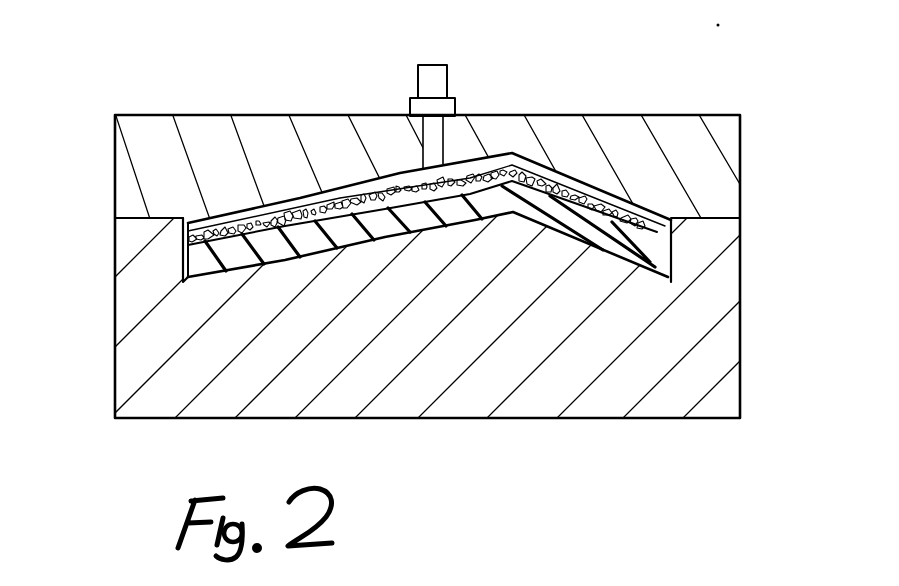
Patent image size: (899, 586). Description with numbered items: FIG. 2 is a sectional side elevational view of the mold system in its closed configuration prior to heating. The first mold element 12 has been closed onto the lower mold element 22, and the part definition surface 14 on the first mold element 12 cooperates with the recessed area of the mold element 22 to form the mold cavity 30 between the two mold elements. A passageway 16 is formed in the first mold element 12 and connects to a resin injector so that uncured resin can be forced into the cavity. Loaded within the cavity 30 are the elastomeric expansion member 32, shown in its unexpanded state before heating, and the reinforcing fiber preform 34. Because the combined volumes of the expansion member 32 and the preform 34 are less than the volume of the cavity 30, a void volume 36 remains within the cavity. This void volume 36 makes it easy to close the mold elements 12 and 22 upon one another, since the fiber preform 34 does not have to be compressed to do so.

The first mold element 12 is at (130, 183).
The mold element 22 is at (132, 366).
The passageway 16 is at (438, 137).
The part definition surface 14 is at (512, 159).
The mold cavity 30 is at (217, 212).
The void volume 36 is at (645, 212).
The reinforcing fiber preform 34 is at (660, 233).
The elastomeric expansion member 32 is at (645, 263).